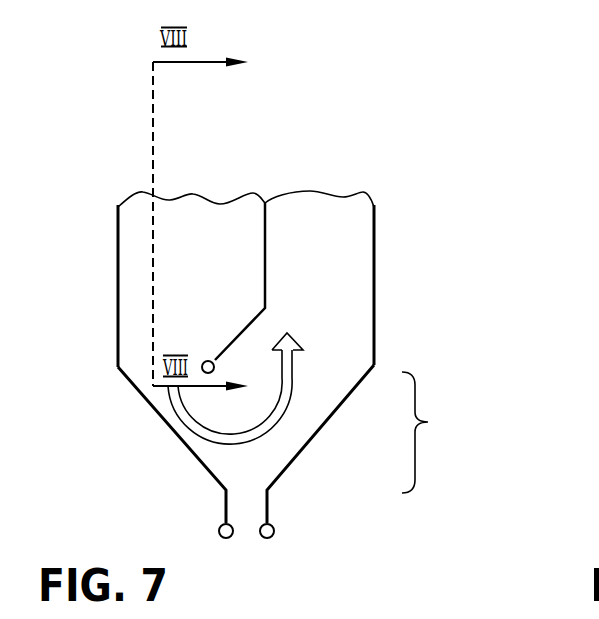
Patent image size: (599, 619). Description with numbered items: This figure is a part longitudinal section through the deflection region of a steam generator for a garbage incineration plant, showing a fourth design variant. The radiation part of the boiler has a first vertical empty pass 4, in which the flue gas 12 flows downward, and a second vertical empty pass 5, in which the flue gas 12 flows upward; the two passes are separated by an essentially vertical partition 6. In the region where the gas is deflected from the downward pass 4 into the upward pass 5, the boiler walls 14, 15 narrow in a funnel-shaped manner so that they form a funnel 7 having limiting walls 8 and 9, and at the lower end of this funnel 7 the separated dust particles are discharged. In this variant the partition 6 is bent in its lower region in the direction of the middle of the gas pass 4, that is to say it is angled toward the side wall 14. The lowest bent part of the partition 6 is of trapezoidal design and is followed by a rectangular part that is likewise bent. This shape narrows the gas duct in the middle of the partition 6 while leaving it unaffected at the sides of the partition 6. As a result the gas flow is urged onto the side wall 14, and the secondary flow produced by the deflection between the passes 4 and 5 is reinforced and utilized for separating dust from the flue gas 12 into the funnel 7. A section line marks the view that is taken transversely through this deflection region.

The first vertical empty pass 4 is at (179, 245).
The second vertical empty pass 5 is at (318, 237).
The partition 6 is at (265, 219).
The funnel 7 is at (427, 432).
The limiting wall 8 is at (307, 441).
The limiting wall 9 is at (172, 432).
The flue gas 12 is at (292, 362).
The side wall 14 is at (118, 308).
The boiler wall 15 is at (374, 250).